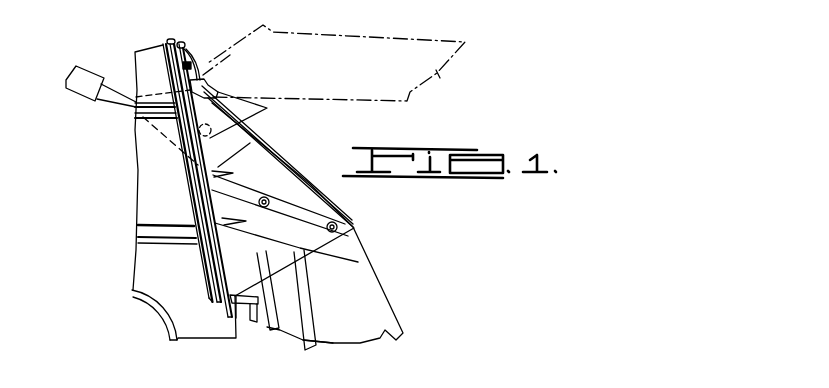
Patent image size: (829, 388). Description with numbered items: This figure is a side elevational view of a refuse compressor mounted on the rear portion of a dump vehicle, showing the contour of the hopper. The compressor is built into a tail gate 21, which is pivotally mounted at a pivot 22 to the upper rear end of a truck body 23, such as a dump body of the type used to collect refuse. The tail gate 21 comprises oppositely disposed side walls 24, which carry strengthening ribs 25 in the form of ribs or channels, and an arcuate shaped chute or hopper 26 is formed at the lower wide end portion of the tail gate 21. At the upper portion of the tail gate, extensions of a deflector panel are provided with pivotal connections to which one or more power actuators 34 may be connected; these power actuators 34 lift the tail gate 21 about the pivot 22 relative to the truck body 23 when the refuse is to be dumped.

The tail gate 21 is at (342, 208).
The pivot 22 is at (228, 62).
The truck body 23 is at (143, 174).
The side walls 24 is at (360, 275).
The strengthening ribs 25 is at (300, 277).
The hopper 26 is at (348, 341).
The power actuators 34 is at (86, 92).